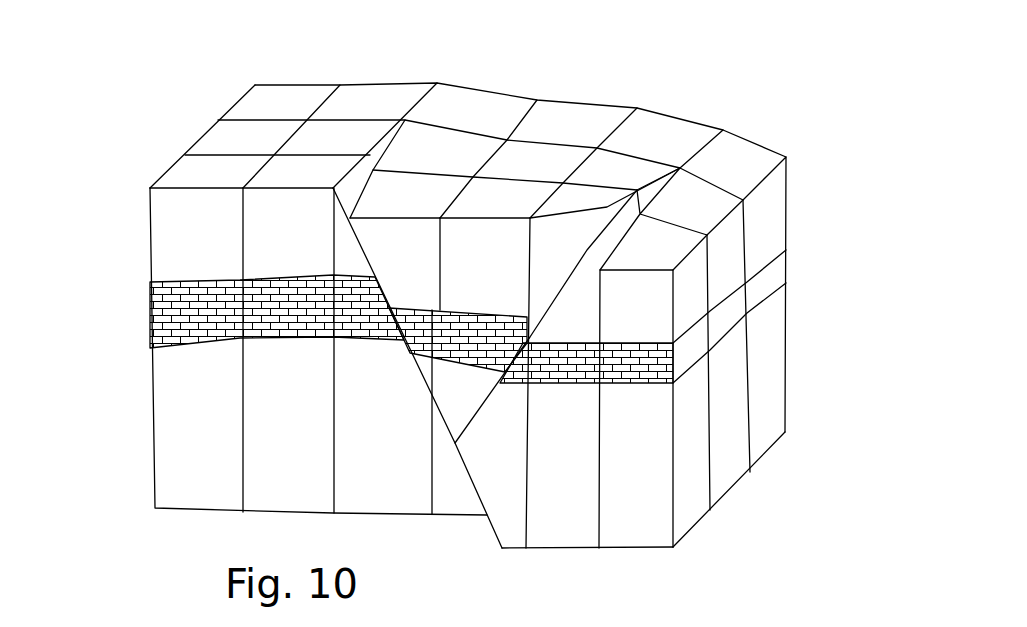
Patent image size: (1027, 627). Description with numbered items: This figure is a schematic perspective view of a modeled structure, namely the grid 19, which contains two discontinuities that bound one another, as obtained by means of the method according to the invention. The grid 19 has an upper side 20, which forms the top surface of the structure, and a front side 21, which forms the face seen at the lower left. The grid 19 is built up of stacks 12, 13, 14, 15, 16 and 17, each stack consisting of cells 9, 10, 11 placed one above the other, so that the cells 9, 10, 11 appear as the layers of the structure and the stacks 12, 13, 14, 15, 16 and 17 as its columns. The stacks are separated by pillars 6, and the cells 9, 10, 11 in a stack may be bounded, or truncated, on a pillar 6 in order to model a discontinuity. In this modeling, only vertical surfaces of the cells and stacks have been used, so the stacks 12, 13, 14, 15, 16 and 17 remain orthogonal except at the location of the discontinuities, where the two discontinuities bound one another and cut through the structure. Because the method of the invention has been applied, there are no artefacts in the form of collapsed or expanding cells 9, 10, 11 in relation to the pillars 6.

The pillar 6 is at (243, 428).
The cell 9 is at (165, 318).
The cell 10 is at (773, 220).
The cell 11 is at (776, 390).
The stack 12 is at (216, 238).
The stack 13 is at (298, 238).
The stack 14 is at (414, 264).
The stack 15 is at (490, 264).
The stack 16 is at (567, 264).
The stack 17 is at (650, 307).
The grid 19 is at (772, 500).
The upper side of the grid 20 is at (643, 65).
The front side of the grid 21 is at (182, 535).